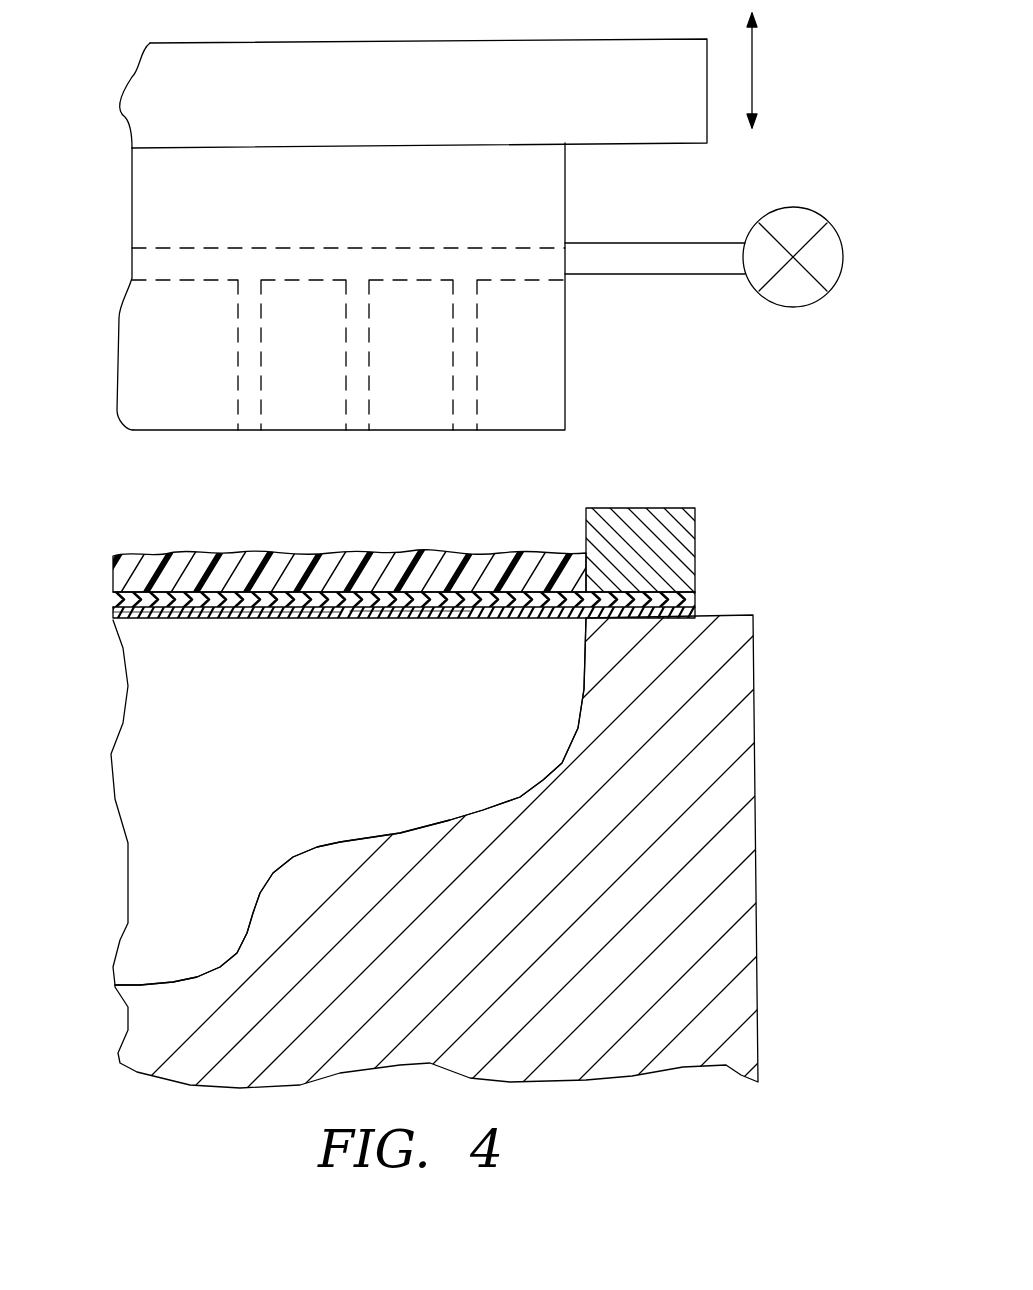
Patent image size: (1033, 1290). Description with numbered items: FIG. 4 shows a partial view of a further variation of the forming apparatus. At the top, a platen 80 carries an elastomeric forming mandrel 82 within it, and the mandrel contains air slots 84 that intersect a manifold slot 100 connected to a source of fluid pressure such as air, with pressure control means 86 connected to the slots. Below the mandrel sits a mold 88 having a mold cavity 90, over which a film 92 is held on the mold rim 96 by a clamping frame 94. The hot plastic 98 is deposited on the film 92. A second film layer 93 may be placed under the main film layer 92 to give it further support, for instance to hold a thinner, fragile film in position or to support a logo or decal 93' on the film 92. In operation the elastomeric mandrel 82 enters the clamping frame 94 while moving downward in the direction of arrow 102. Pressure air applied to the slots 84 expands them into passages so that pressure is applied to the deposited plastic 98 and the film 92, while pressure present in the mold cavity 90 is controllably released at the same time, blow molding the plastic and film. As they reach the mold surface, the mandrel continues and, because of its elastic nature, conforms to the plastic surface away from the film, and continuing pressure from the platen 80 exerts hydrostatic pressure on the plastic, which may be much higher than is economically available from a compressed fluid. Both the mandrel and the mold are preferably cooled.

The platen 80 is at (449, 114).
The elastomeric forming mandrel 82 is at (530, 197).
The air slots 84 is at (357, 405).
The pressure control means 86 is at (835, 246).
The mold 88 is at (714, 864).
The mold cavity 90 is at (178, 955).
The film 92 is at (684, 597).
The second film layer 93 is at (226, 651).
The logo or decal 93' is at (410, 647).
The clamping frame 94 is at (650, 514).
The mold rim 96 is at (540, 582).
The hot plastic 98 is at (262, 563).
The manifold slot 100 is at (173, 263).
The arrow 102 is at (753, 68).